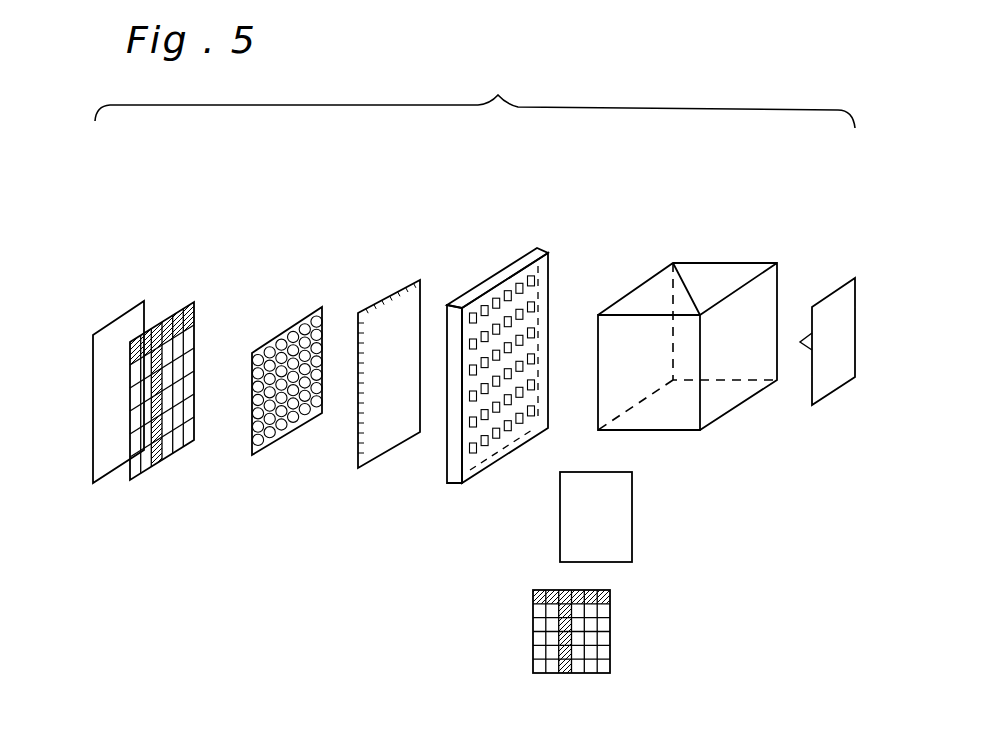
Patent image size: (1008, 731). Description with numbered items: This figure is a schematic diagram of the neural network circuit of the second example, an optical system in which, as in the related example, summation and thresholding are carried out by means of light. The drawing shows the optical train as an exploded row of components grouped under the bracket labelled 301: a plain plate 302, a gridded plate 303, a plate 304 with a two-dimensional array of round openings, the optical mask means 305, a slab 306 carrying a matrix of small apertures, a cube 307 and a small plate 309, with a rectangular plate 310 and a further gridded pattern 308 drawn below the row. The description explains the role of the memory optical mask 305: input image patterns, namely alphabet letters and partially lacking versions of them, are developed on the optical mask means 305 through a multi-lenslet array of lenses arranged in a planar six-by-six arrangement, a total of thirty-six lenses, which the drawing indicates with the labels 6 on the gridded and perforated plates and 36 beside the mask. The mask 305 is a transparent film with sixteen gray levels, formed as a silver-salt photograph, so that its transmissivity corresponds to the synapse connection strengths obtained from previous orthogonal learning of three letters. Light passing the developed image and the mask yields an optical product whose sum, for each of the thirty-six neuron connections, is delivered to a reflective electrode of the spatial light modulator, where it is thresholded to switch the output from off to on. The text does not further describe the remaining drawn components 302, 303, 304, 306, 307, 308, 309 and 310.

The optical assembly 301 is at (475, 89).
The transparent plate 302 is at (105, 337).
The grid plate 303 is at (175, 302).
The honeycomb aperture plate 304 is at (283, 328).
The optical mask means 305 is at (423, 280).
The perforated slab 306 is at (502, 268).
The cube prism 307 is at (717, 262).
The grid pattern 308 is at (610, 628).
The mirror plate 309 is at (835, 287).
The screen plate 310 is at (623, 497).
The cell 6 is at (197, 308).
The graduation marks 36 is at (348, 363).